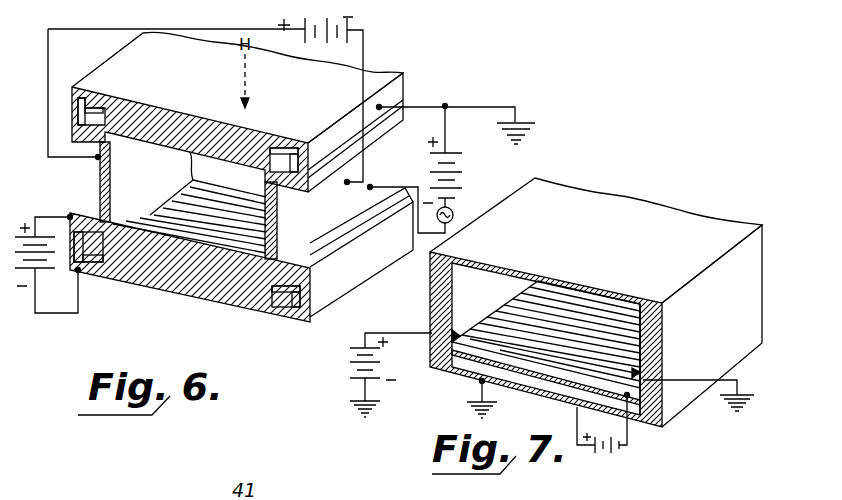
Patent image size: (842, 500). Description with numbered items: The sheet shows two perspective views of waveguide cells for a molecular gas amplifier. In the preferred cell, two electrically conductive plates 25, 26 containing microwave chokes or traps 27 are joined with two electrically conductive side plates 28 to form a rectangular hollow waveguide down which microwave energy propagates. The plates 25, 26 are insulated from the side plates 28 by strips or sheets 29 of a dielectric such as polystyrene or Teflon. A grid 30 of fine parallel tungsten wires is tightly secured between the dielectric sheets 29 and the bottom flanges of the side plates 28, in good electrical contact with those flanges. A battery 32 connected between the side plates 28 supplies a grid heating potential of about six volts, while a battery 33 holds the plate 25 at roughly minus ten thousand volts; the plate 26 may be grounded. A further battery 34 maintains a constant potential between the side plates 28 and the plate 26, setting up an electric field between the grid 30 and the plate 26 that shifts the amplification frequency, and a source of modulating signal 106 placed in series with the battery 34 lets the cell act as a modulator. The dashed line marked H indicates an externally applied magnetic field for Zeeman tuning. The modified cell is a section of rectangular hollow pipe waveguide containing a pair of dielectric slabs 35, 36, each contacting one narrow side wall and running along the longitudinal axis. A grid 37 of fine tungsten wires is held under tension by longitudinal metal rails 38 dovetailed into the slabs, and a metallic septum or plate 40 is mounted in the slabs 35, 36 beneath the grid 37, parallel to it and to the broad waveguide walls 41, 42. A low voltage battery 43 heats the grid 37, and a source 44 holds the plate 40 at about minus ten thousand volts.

In FIG. 6, the electrically conductive plate 25 is at (197, 288).
In FIG. 6, the electrically conductive plate 26 is at (190, 88).
In FIG. 6, the microwave chokes or traps 27 is at (83, 100).
In FIG. 6, the electrically conductive side plates 28 is at (100, 178).
In FIG. 6, the dielectric strips or sheets 29 is at (155, 205).
In FIG. 6, the grid 30 is at (258, 215).
In FIG. 6, the battery 32 is at (352, 21).
In FIG. 6, the battery 33 is at (36, 279).
In FIG. 6, the battery 34 is at (455, 134).
In FIG. 6, the source of modulating signal 106 is at (455, 205).
In FIG. 7, the dielectric slab 35 is at (430, 322).
In FIG. 7, the dielectric slab 36 is at (660, 320).
In FIG. 7, the grid 37 is at (602, 310).
In FIG. 7, the longitudinal metal bars or rails 38 is at (453, 330).
In FIG. 7, the metallic septum or plate 40 is at (545, 388).
In FIG. 7, the broad waveguide wall 41 is at (702, 195).
In FIG. 7, the broad waveguide wall 42 is at (466, 378).
In FIG. 7, the low voltage battery 43 is at (350, 383).
In FIG. 7, the source 44 is at (630, 450).